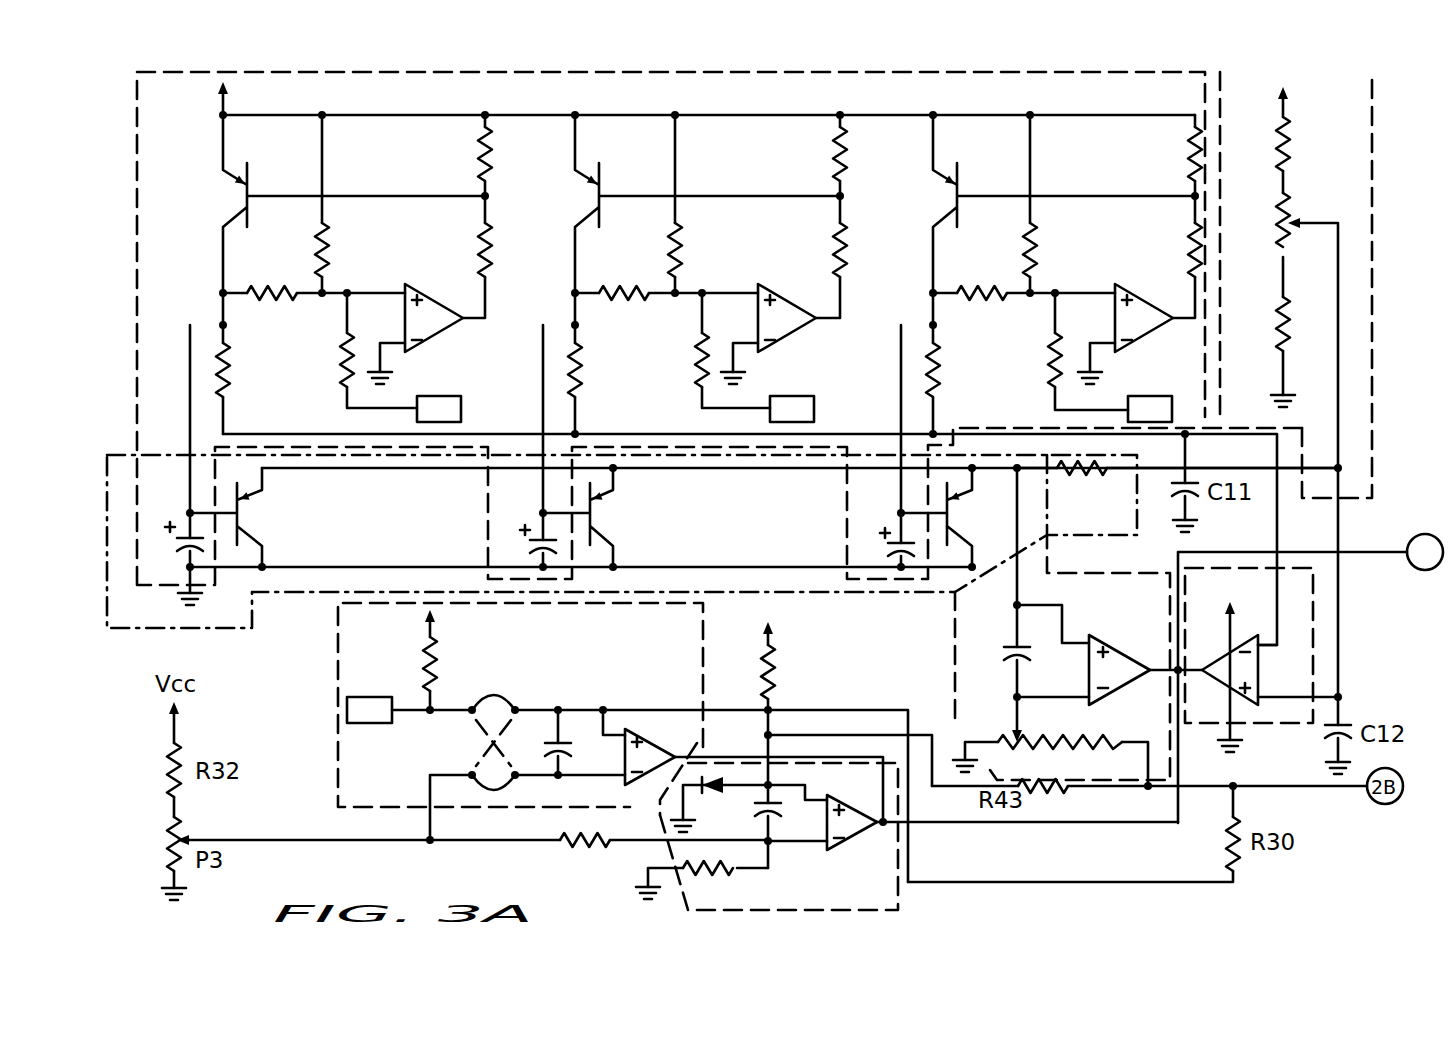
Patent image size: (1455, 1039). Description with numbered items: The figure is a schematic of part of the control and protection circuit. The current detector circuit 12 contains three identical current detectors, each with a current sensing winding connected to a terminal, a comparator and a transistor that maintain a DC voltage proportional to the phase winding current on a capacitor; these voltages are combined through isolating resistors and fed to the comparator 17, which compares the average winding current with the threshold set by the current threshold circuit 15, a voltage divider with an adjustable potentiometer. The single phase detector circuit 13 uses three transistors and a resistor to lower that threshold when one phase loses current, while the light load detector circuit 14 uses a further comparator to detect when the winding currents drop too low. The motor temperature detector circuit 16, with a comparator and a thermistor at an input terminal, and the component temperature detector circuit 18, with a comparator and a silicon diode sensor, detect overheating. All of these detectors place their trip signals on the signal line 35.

The current detector circuit 12 is at (138, 72).
The single phase detector circuit 13 is at (1093, 535).
The light load detector circuit 14 is at (840, 592).
The current threshold circuit 15 is at (1372, 72).
The motor temperature detector circuit 16 is at (338, 807).
The comparator 17 is at (1313, 607).
The component temperature detector circuit 18 is at (898, 910).
The signal line 35 is at (1380, 548).